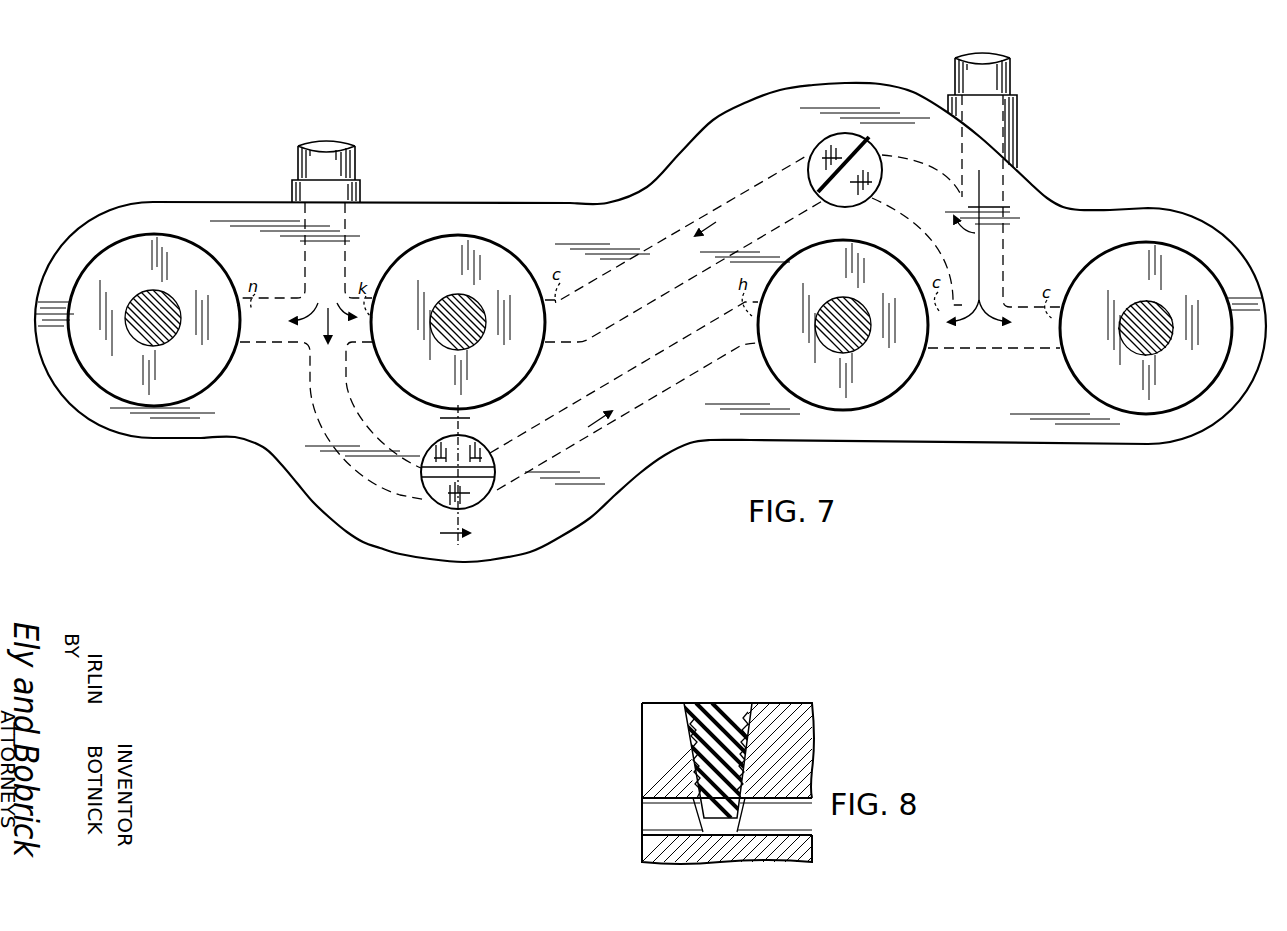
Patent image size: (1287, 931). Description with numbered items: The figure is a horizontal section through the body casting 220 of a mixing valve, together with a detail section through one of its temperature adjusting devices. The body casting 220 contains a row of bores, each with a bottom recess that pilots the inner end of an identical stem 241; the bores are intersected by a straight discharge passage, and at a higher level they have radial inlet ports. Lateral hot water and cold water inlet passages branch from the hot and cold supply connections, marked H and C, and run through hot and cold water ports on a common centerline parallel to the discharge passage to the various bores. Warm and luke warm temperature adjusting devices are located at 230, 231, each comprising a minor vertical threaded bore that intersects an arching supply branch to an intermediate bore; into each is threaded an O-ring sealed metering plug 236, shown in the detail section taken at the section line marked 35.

In FIG. 7, the body casting 220 is at (346, 194).
In FIG. 7, the warm temperature adjusting device 230 is at (818, 200).
In FIG. 7, the luke warm temperature adjusting device 231 is at (432, 500).
In FIG. 8, the luke warm temperature adjusting device 231 is at (705, 703).
In FIG. 8, the metering plug 236 is at (737, 712).
In FIG. 7, the stem 241 is at (1152, 378).
In FIG. 7, the section line 35 is at (472, 475).
In FIG. 7, the hot water inlet H is at (338, 165).
In FIG. 7, the cold water inlet C is at (990, 76).